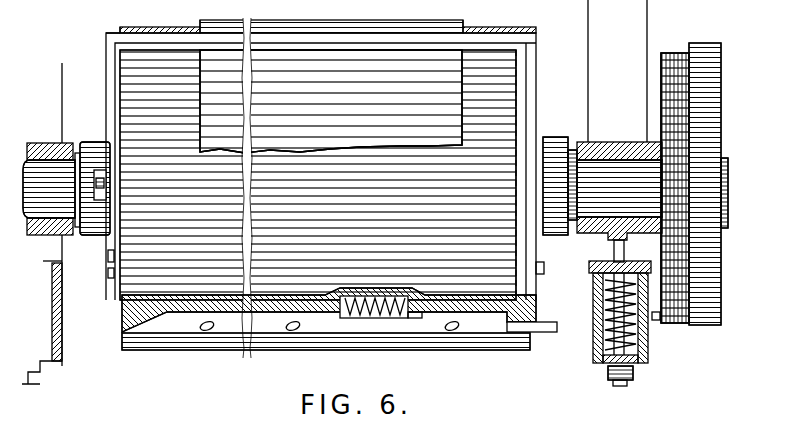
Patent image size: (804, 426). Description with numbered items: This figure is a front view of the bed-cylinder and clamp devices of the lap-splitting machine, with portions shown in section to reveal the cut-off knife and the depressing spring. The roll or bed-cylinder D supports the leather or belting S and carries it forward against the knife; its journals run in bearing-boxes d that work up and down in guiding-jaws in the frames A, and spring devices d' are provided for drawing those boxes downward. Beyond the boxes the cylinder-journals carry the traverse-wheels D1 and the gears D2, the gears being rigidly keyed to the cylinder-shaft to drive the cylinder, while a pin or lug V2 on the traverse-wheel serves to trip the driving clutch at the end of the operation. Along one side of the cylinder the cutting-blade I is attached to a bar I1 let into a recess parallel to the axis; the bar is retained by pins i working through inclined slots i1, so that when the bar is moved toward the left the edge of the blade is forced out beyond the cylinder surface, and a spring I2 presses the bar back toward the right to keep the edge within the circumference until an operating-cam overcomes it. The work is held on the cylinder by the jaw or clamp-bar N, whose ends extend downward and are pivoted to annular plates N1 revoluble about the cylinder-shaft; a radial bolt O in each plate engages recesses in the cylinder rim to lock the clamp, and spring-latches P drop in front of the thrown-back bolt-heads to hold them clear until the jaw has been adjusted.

The jaw or clamp-bar N is at (321, 160).
The annular plates N1 is at (325, 310).
The roll or bed-cylinder D is at (318, 175).
The leather or belting S is at (331, 101).
The bearing-boxes d is at (340, 180).
The spring devices d' is at (626, 313).
The radial bolt O is at (105, 237).
The spring-latches P is at (107, 263).
The frames A is at (617, 71).
The traverse-wheels D1 is at (675, 172).
The gears D2 is at (708, 198).
The cutting-blade I is at (325, 350).
The bar I1 is at (419, 323).
The spring I2 is at (385, 335).
The pins i is at (245, 326).
The inclined slots i1 is at (337, 326).
The pin or lug V2 is at (658, 320).